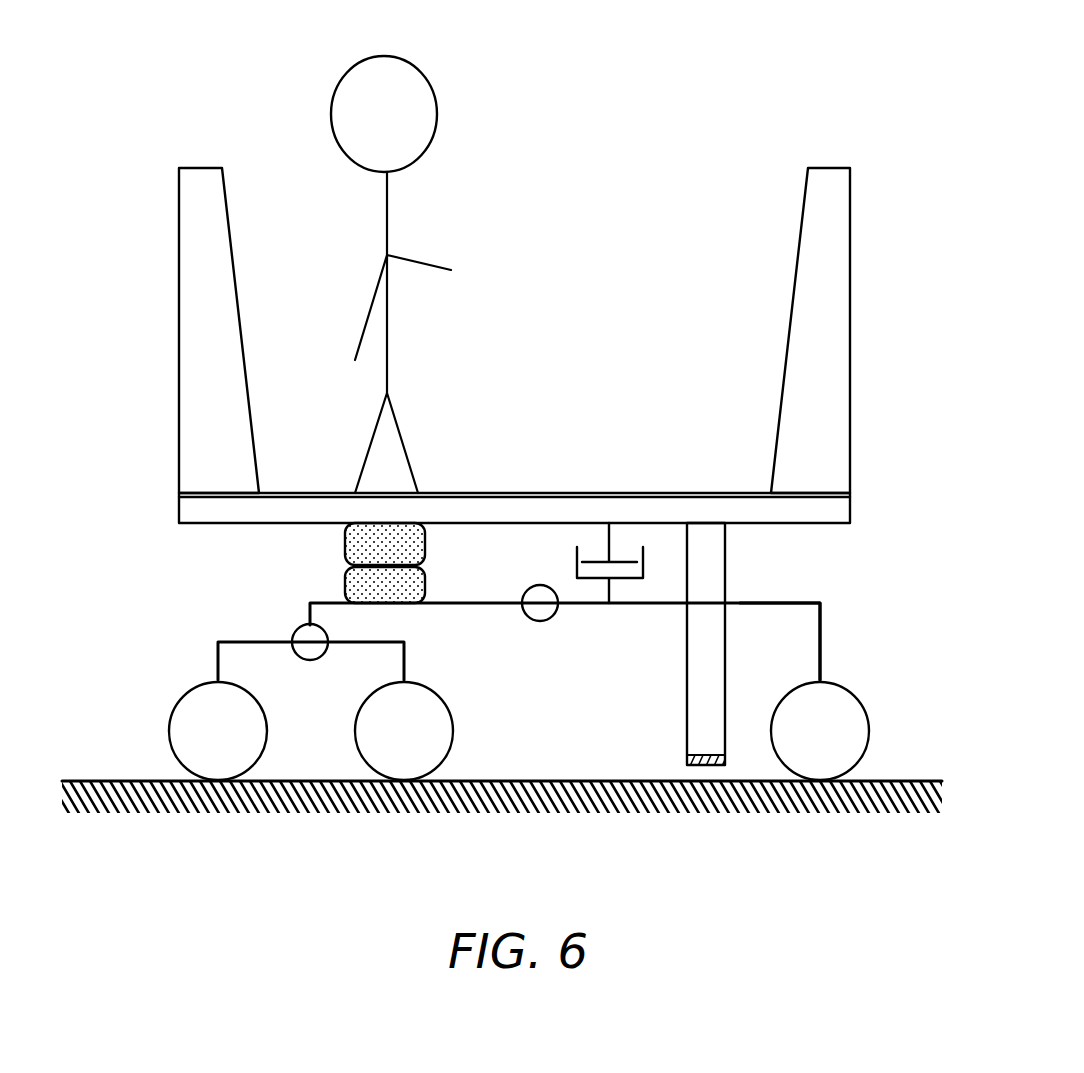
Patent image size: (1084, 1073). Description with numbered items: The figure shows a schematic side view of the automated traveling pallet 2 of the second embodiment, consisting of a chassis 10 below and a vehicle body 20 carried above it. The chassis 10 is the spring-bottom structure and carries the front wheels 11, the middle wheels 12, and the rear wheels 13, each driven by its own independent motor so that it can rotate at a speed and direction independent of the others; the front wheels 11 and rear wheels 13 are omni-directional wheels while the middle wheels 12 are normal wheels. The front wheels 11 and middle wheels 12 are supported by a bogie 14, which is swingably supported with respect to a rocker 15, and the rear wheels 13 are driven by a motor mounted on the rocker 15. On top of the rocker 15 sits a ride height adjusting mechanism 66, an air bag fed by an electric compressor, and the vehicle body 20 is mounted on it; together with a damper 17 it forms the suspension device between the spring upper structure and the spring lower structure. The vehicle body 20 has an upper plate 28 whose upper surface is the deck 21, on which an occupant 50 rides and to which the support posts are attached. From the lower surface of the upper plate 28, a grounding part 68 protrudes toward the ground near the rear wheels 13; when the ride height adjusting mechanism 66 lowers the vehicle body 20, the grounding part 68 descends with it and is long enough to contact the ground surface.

The automated traveling pallet 2 is at (180, 130).
The chassis 10 is at (165, 614).
The front wheels 11 is at (168, 733).
The middle wheels 12 is at (453, 735).
The rear wheels 13 is at (869, 735).
The bogie 14 is at (258, 640).
The rocker 15 is at (803, 601).
The damper 17 is at (577, 568).
The vehicle body 20 is at (143, 455).
The deck 21 is at (460, 493).
The upper plate 28 is at (851, 508).
The occupant 50 is at (339, 74).
The ride height adjusting mechanism 66 is at (345, 545).
The grounding part 68 is at (687, 655).